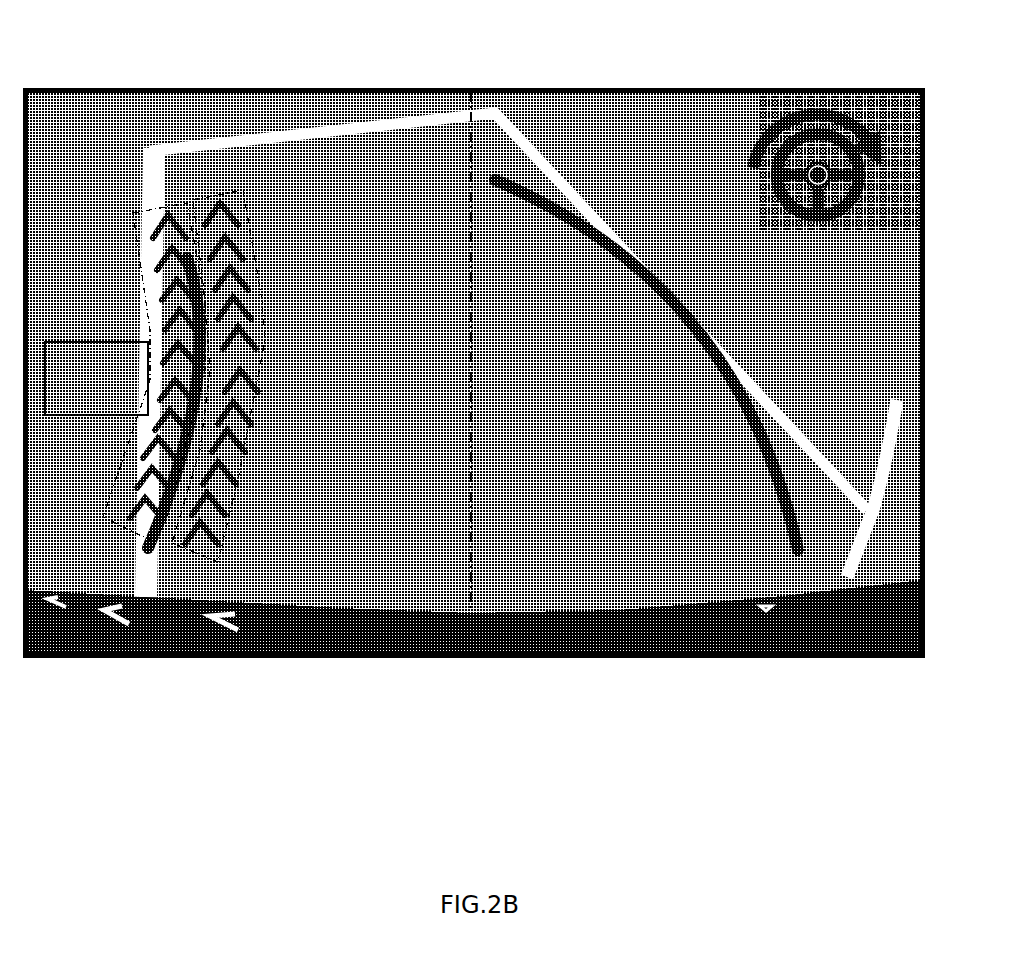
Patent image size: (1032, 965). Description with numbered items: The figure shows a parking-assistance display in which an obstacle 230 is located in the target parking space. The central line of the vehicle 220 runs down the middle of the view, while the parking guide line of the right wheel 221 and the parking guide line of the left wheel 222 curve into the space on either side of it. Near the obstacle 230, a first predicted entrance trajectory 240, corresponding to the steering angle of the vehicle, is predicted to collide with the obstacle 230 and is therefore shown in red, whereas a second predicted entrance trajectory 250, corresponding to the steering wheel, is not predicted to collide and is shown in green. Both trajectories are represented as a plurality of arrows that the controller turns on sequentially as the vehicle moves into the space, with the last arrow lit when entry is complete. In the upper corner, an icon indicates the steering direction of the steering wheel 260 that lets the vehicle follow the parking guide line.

The central line of the vehicle 220 is at (470, 310).
The parking guide line of the right wheel 221 is at (160, 550).
The parking guide line of the left wheel 222 is at (750, 437).
The obstacle 230 is at (65, 342).
The first predicted entrance trajectory 240 is at (143, 210).
The second predicted entrance trajectory 250 is at (220, 195).
The steering direction of the steering wheel 260 is at (778, 100).